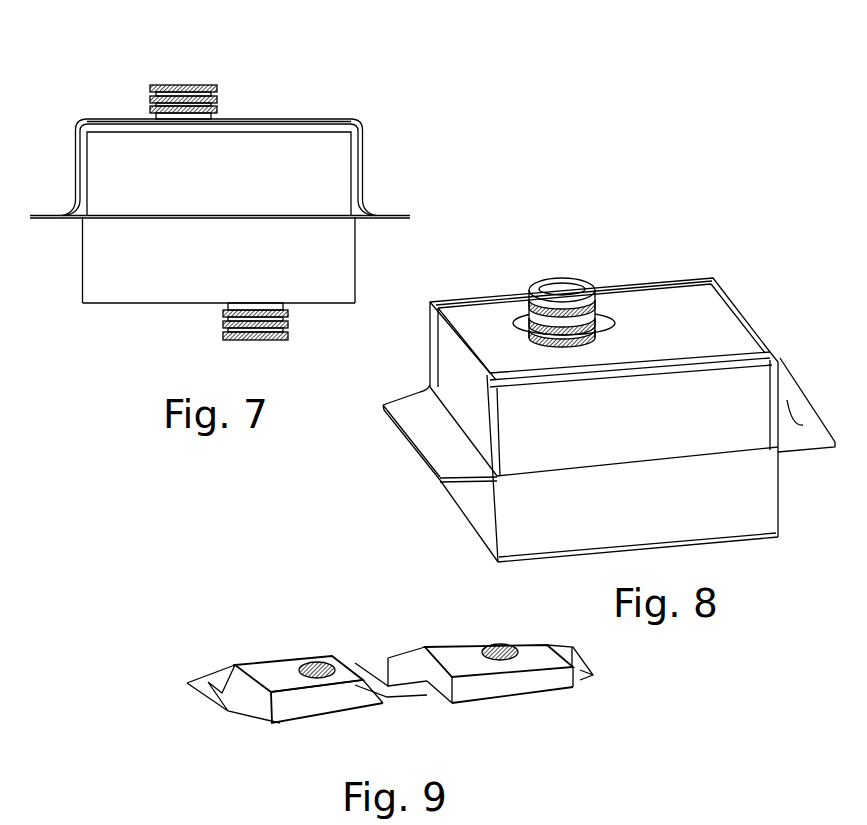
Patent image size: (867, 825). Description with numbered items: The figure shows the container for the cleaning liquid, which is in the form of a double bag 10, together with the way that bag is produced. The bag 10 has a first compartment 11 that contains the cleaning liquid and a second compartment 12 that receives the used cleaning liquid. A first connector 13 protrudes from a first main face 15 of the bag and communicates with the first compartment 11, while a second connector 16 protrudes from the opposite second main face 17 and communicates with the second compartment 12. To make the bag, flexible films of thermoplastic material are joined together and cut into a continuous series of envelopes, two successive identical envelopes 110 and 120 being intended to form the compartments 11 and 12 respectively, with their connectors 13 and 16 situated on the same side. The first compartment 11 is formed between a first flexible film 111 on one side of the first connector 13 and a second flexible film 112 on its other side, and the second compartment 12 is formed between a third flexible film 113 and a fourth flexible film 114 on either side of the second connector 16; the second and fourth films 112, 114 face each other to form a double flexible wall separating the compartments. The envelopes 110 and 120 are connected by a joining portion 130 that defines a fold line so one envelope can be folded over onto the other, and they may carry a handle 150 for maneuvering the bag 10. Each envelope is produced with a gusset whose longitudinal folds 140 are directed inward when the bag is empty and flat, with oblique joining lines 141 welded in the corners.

In FIG. 7, the double bag 10 is at (78, 66).
In FIG. 8, the double bag 10 is at (738, 240).
In FIG. 7, the first compartment 11 is at (125, 277).
In FIG. 8, the first compartment 11 is at (593, 510).
In FIG. 7, the second compartment 12 is at (262, 168).
In FIG. 8, the second compartment 12 is at (665, 386).
In FIG. 7, the first connector 13 is at (225, 330).
In FIG. 9, the first connector 13 is at (477, 637).
In FIG. 7, the first main face 15 is at (168, 304).
In FIG. 7, the second connector 16 is at (148, 85).
In FIG. 8, the second connector 16 is at (525, 297).
In FIG. 9, the second connector 16 is at (300, 663).
In FIG. 7, the second main face 17 is at (240, 119).
In FIG. 8, the second main face 17 is at (617, 303).
In FIG. 9, the envelope 110 is at (360, 705).
In FIG. 9, the first flexible film 111 is at (440, 652).
In FIG. 9, the second flexible film 112 is at (553, 690).
In FIG. 9, the third flexible film 113 is at (250, 668).
In FIG. 9, the fourth flexible film 114 is at (278, 723).
In FIG. 9, the envelope 120 is at (487, 693).
In FIG. 9, the joining portion 130 is at (423, 695).
In FIG. 9, the longitudinal folds 140 is at (292, 708).
In FIG. 9, the oblique joining lines 141 is at (230, 710).
In FIG. 9, the handle 150 is at (583, 677).